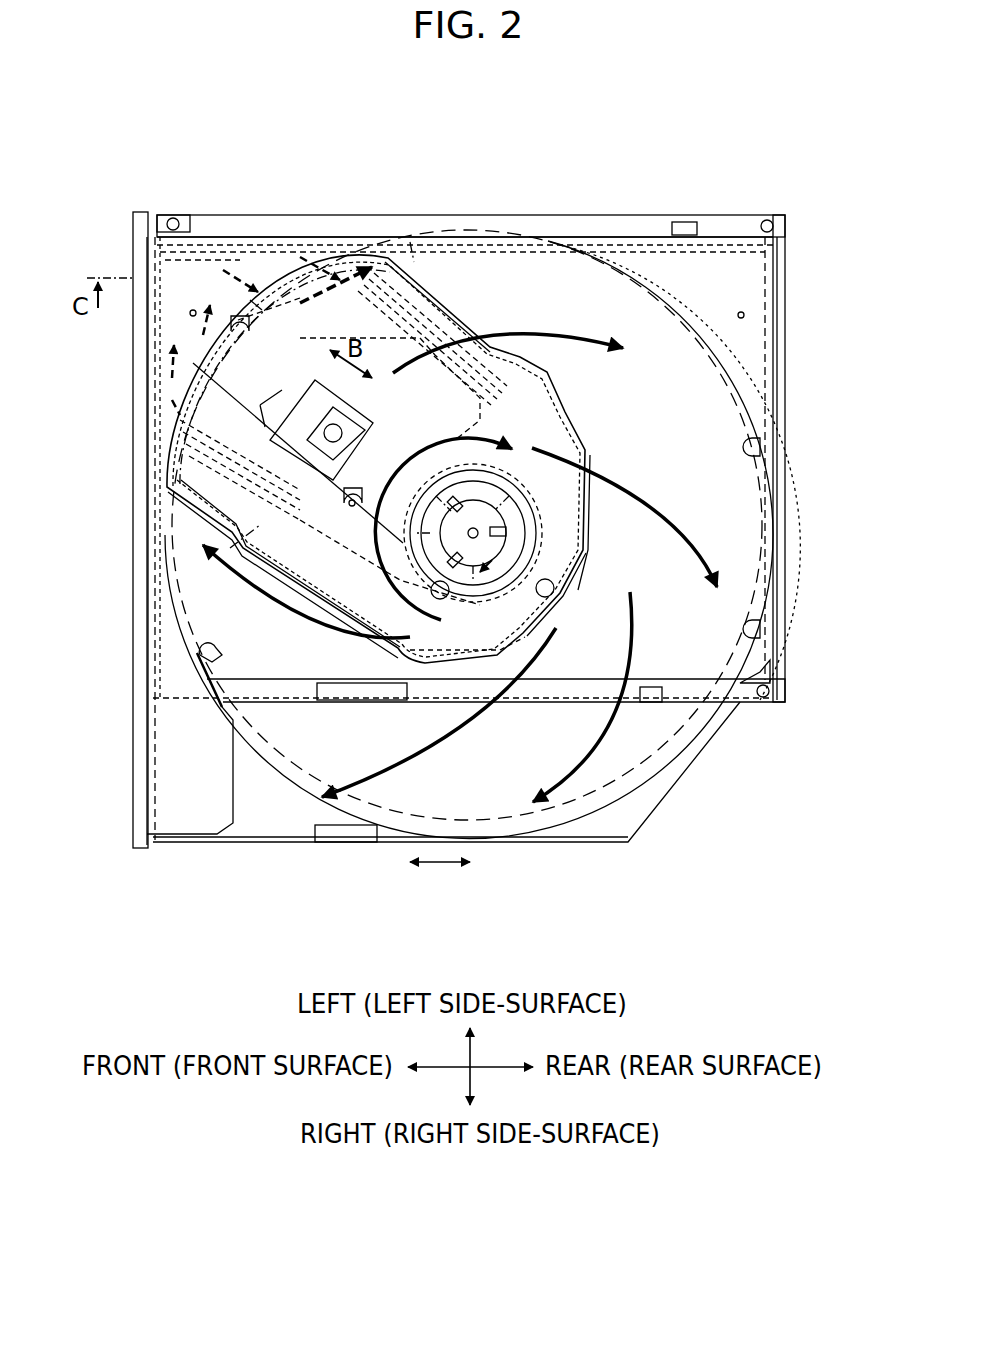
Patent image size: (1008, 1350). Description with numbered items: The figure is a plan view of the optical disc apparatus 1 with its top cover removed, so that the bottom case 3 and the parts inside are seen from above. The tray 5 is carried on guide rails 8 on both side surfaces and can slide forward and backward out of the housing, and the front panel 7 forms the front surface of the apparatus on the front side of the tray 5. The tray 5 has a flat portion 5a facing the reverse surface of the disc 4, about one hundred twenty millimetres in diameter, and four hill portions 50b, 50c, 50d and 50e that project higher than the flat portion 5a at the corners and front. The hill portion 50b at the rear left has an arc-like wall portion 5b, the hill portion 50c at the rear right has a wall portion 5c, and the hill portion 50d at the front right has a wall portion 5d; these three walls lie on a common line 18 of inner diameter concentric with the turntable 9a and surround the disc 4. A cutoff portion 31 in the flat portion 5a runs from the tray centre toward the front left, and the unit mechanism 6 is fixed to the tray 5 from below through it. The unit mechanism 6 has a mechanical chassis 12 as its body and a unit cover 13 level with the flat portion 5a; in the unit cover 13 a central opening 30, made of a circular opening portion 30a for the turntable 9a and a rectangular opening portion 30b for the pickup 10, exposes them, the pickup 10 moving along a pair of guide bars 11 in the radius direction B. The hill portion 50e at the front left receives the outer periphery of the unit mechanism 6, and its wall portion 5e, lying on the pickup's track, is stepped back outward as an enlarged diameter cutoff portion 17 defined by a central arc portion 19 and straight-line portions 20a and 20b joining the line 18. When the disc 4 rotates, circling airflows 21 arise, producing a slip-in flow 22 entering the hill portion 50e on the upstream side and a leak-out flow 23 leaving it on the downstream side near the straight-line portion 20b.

The optical disc apparatus 1 is at (440, 140).
The bottom case 3 is at (787, 265).
The optical disc 4 is at (660, 270).
The tray 5 is at (716, 255).
The flat portion 5a is at (740, 543).
The left-rear side wall portion 5b is at (757, 443).
The right-rear side wall portion 5c is at (753, 612).
The right-front side wall portion 5d is at (175, 740).
The front-side roof-like wall portion 5e is at (245, 320).
The unit mechanism 6 is at (443, 290).
The front panel 7 is at (132, 660).
The guide rails 8 is at (545, 232).
The turntable 9a is at (530, 483).
The pickup 10 is at (310, 378).
The guide bars 11 is at (440, 355).
The mechanical chassis 12 is at (580, 521).
The unit cover 13 is at (498, 415).
The enlarged diameter cutoff portion 17 is at (250, 300).
The line of inner diameter 18 is at (410, 242).
The arc portion 19 is at (203, 387).
The straight-line portion 20a is at (172, 457).
The downstream-side straight-line portion 20b is at (330, 268).
The circling airflows 21 is at (555, 568).
The slip-in flow 22 is at (150, 362).
The leak-out flow 23 is at (360, 280).
The central opening 30 is at (113, 917).
The circular opening portion 30a is at (438, 598).
The rectangular opening portion 30b is at (350, 512).
The cutoff portion 31 is at (593, 620).
The hill portion 50b is at (745, 315).
The hill portion 50c is at (765, 660).
The hill portion 50d is at (165, 673).
The hill portion 50e is at (330, 395).